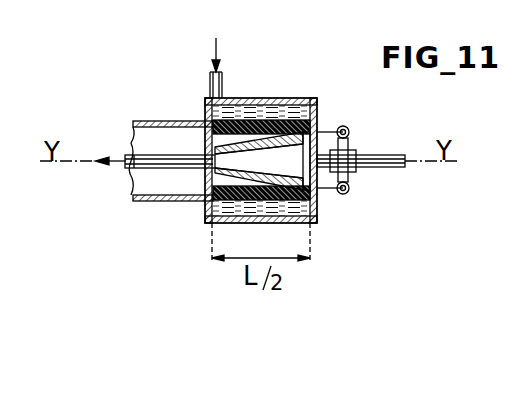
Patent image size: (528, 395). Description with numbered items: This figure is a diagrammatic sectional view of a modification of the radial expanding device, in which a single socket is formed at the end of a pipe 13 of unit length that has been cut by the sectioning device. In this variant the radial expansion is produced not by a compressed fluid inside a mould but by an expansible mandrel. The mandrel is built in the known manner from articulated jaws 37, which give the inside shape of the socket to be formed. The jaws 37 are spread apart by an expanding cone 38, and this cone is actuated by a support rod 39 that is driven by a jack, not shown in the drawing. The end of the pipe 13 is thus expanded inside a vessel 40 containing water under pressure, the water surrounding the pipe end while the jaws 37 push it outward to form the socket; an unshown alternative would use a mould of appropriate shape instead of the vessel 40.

The pipe 13 is at (143, 201).
The articulated jaws 37 is at (262, 161).
The expanding cone 38 is at (310, 170).
The support rod 39 is at (385, 168).
The vessel of water under pressure 40 is at (230, 112).